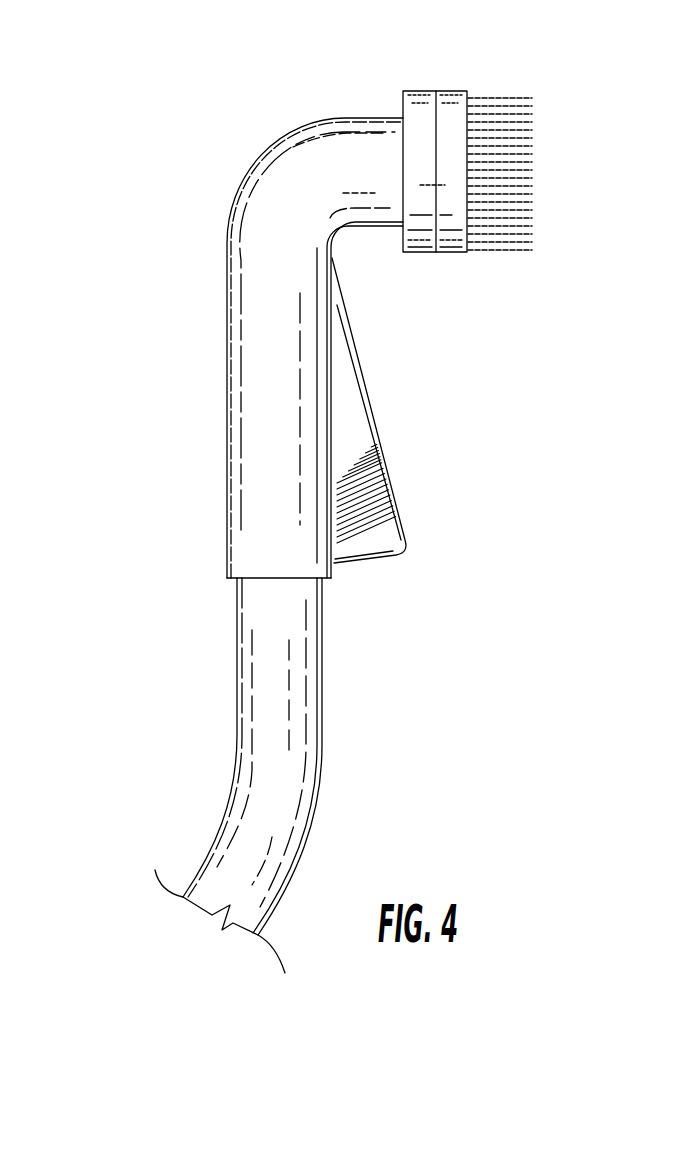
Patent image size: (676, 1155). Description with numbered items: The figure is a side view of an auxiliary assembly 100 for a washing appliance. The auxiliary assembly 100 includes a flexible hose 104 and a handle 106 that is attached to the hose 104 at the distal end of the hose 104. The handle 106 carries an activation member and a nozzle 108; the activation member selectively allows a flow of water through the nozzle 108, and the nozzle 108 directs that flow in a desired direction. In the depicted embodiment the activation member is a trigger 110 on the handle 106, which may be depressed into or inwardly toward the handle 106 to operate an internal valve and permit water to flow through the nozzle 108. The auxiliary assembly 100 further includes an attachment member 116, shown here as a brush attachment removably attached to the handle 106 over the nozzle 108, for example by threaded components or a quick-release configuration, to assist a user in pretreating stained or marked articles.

The auxiliary assembly 100 is at (166, 218).
The hose 104 is at (297, 753).
The handle 106 is at (224, 136).
The nozzle 108 is at (450, 149).
The trigger 110 is at (385, 505).
The attachment member 116 is at (450, 246).